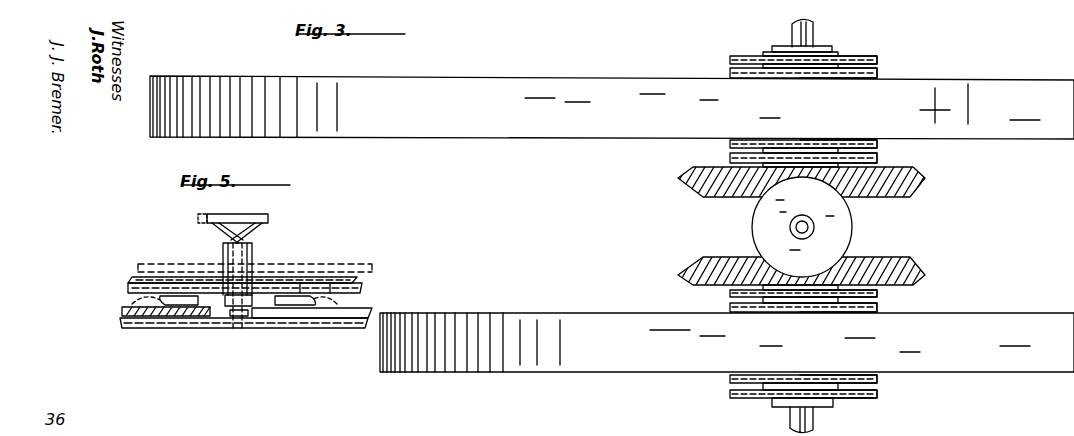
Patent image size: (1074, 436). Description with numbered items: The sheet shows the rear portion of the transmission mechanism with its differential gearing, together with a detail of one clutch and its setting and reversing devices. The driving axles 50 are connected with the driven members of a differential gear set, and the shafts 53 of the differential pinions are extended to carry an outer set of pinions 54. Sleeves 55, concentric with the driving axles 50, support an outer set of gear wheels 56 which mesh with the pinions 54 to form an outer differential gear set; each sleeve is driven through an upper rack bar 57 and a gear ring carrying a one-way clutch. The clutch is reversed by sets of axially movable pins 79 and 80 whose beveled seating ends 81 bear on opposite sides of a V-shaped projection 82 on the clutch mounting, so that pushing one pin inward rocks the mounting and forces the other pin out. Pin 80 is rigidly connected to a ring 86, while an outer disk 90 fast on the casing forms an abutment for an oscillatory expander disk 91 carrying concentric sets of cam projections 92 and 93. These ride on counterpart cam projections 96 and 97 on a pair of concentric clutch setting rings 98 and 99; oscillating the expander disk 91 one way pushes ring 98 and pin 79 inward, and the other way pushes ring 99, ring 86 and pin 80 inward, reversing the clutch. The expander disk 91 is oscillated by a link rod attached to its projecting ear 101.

In FIG. 3, the driving axles 50 is at (813, 30).
In FIG. 3, the shafts of the differential pinions 53 is at (790, 227).
In FIG. 3, the outer set of pinions 54 is at (802, 227).
In FIG. 3, the sleeves 55 is at (877, 300).
In FIG. 3, the outer set of gear wheels 56 is at (912, 190).
In FIG. 3, the upper rack bar 57 is at (612, 224).
In FIG. 5, the pin 79 is at (222, 248).
In FIG. 5, the pin 80 is at (255, 250).
In FIG. 5, the beveled seating ends 81 is at (226, 232).
In FIG. 5, the V-shaped projection 82 is at (228, 214).
In FIG. 3, the ring 86 is at (877, 73).
In FIG. 5, the ring 86 is at (315, 290).
In FIG. 3, the outer disk 90 is at (757, 38).
In FIG. 5, the outer disk 90 is at (300, 318).
In FIG. 3, the expander disk 91 is at (877, 60).
In FIG. 5, the expander disk 91 is at (125, 310).
In FIG. 5, the cam projections 92 is at (172, 306).
In FIG. 5, the cam projections 93 is at (313, 302).
In FIG. 5, the cam projections 96 is at (185, 297).
In FIG. 5, the cam projections 97 is at (300, 290).
In FIG. 5, the clutch setting ring 98 is at (130, 290).
In FIG. 3, the clutch setting ring 99 is at (735, 72).
In FIG. 5, the clutch setting ring 99 is at (355, 284).
In FIG. 5, the projecting ear 101 is at (235, 316).